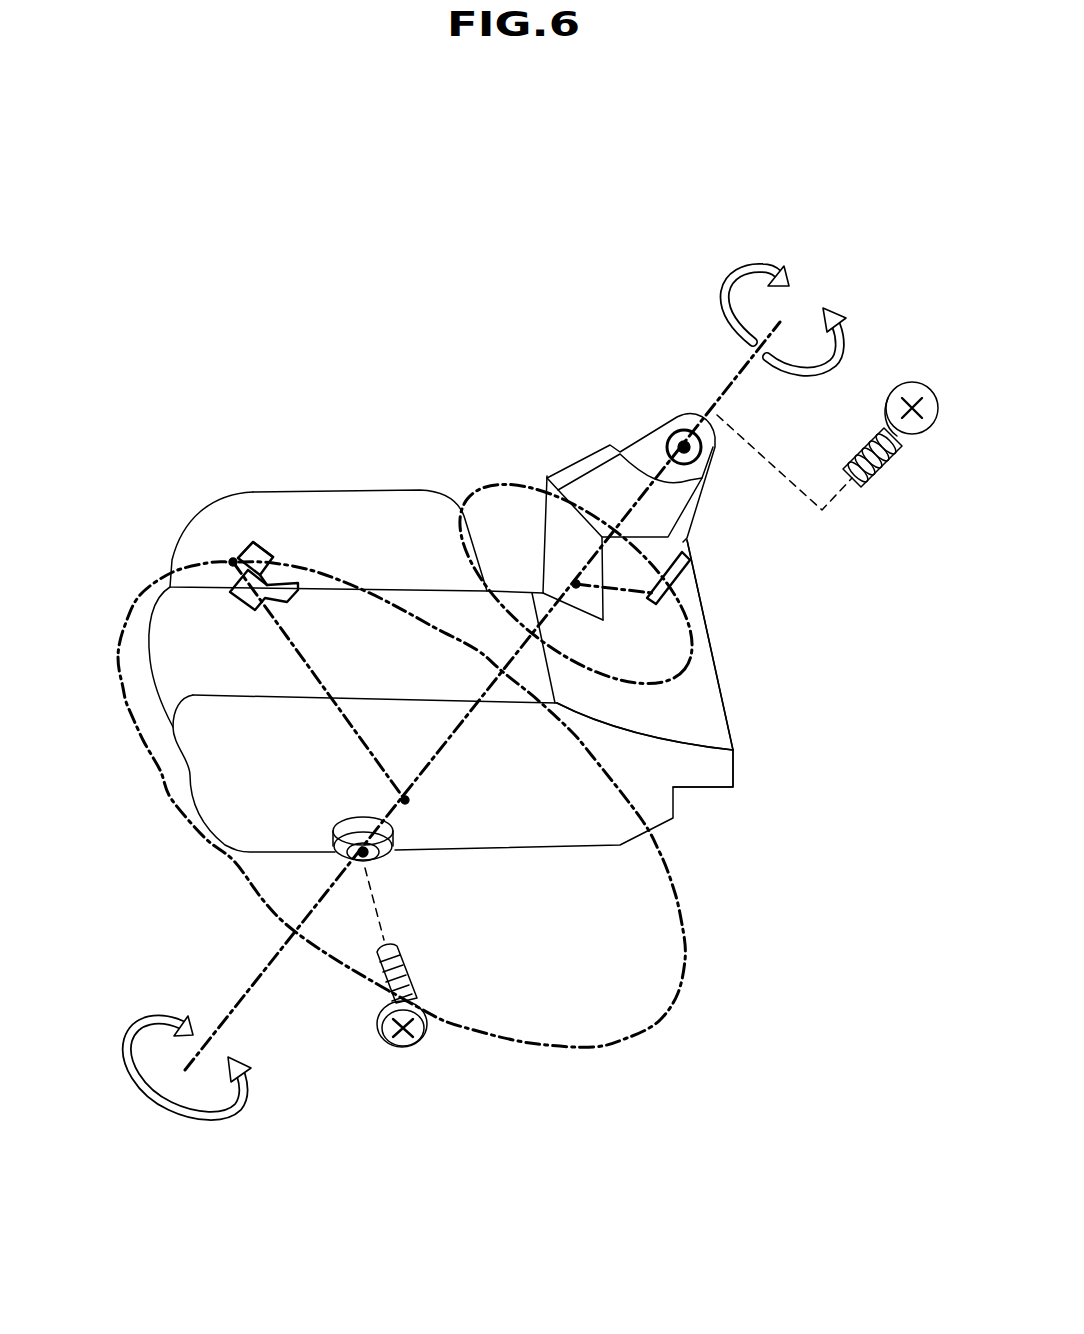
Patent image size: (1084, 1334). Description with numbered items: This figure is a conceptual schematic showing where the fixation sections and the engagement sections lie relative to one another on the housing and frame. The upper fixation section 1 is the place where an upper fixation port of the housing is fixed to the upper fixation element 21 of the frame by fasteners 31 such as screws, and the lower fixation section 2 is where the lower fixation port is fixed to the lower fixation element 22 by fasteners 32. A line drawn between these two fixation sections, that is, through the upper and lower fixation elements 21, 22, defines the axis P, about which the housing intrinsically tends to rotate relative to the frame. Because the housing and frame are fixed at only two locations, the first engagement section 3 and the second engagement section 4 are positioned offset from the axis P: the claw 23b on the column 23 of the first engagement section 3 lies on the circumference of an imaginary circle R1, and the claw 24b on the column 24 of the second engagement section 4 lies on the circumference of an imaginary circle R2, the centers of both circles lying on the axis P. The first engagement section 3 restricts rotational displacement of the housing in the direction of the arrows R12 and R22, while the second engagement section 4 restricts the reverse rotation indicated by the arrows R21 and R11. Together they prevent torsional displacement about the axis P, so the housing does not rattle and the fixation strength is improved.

The upper fixation section 1 is at (601, 422).
The lower fixation section 2 is at (395, 905).
The first engagement section 3 is at (710, 582).
The second engagement section 4 is at (217, 527).
The upper fixation element 21 is at (639, 415).
The lower fixation element 22 is at (395, 873).
The support portion 23 is at (705, 607).
The claw 23b is at (692, 560).
The projection 24 is at (270, 540).
The claw 24b is at (258, 545).
The fasteners 31 is at (915, 393).
The fasteners 32 is at (388, 1035).
The axis P is at (263, 975).
The imaginary circle R1 is at (712, 645).
The imaginary circle R2 is at (620, 1040).
The arrow R11 is at (612, 693).
The arrow R12 is at (455, 490).
The arrow R21 is at (313, 540).
The arrow R22 is at (100, 590).